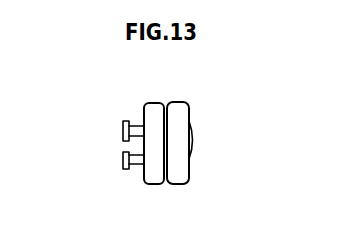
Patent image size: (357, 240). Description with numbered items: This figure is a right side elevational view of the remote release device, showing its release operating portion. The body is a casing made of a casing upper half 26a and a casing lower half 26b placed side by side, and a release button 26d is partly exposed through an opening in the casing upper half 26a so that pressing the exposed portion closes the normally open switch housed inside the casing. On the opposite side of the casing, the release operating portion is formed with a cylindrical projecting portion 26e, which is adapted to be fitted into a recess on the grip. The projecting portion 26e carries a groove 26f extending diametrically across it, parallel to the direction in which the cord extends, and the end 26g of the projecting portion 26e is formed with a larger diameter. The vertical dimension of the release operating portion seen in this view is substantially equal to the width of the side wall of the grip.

The casing upper half 26a is at (180, 175).
The casing lower half 26b is at (158, 175).
The release button 26d is at (195, 140).
The projecting portion 26e is at (138, 161).
The groove 26f is at (128, 144).
The end of projecting portion 26g is at (123, 161).